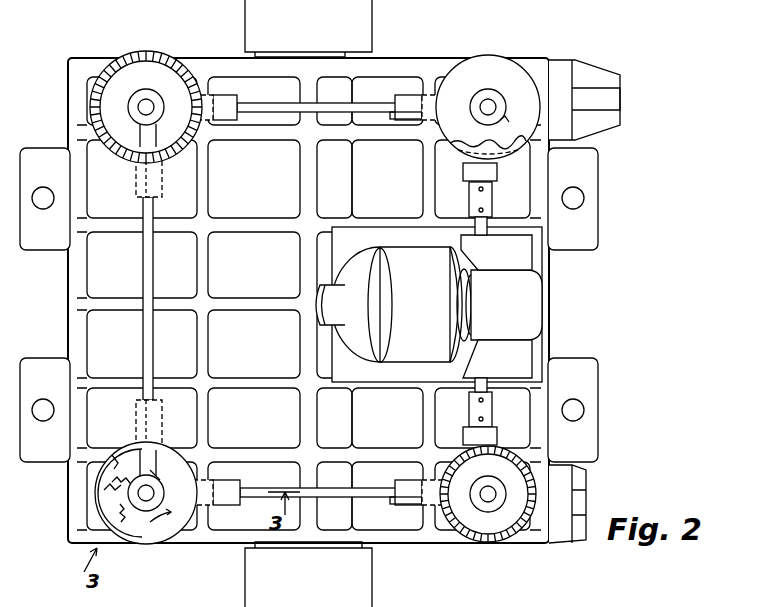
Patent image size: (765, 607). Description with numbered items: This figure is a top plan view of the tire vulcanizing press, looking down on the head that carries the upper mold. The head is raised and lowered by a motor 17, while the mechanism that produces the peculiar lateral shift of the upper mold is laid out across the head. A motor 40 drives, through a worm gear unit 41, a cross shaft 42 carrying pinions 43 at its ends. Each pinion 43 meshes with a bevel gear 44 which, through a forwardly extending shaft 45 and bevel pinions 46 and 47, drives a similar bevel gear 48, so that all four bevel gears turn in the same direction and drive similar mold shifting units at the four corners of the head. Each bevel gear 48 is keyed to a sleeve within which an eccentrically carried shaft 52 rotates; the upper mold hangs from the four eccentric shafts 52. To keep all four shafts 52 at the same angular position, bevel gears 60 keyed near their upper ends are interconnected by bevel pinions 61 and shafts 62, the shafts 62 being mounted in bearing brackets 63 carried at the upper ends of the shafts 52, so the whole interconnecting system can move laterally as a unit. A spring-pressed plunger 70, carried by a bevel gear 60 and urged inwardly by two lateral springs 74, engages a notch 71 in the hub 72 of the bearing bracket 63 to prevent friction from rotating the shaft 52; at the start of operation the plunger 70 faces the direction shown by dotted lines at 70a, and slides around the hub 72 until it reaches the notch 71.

The motor 17 is at (382, 594).
The motor 40 is at (389, 304).
The worm gear unit 41 is at (499, 305).
The cross shaft 42 is at (500, 380).
The pinion 43 is at (470, 438).
The bevel gear 44 is at (500, 445).
The forwardly extending shaft 45 is at (335, 497).
The bevel pinion 46 is at (432, 510).
The bevel pinion 47 is at (196, 96).
The bevel gear 48 is at (138, 520).
The eccentrically carried shaft 52 is at (498, 494).
The bevel gear 60 is at (497, 540).
The bevel pinion 61 is at (215, 475).
The shaft 62 is at (331, 490).
The bearing bracket 63 is at (463, 535).
The spring-pressed plunger 70 is at (519, 101).
The plunger starting position 70a is at (104, 491).
The notch 71 is at (130, 462).
The hub 72 is at (165, 470).
The lateral spring 74 is at (140, 525).